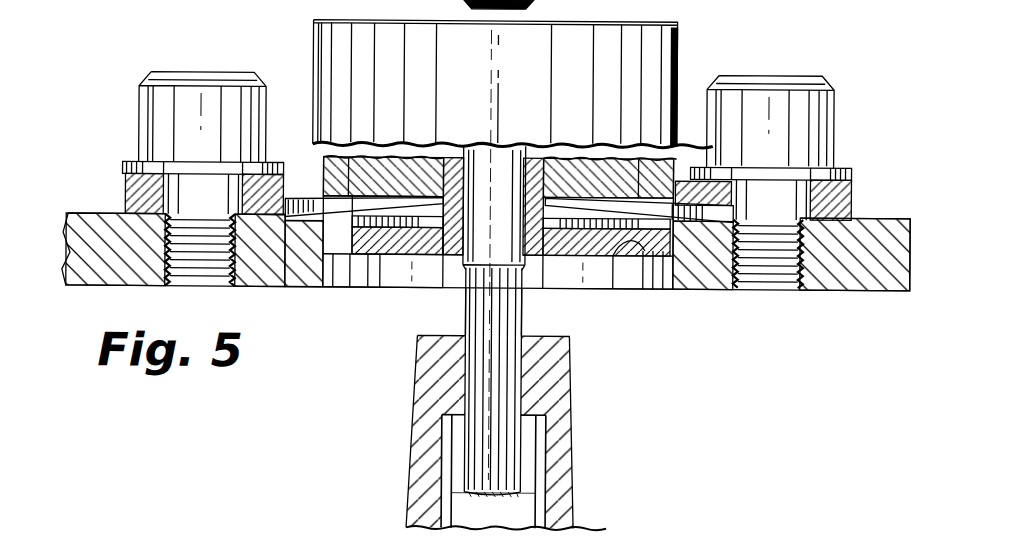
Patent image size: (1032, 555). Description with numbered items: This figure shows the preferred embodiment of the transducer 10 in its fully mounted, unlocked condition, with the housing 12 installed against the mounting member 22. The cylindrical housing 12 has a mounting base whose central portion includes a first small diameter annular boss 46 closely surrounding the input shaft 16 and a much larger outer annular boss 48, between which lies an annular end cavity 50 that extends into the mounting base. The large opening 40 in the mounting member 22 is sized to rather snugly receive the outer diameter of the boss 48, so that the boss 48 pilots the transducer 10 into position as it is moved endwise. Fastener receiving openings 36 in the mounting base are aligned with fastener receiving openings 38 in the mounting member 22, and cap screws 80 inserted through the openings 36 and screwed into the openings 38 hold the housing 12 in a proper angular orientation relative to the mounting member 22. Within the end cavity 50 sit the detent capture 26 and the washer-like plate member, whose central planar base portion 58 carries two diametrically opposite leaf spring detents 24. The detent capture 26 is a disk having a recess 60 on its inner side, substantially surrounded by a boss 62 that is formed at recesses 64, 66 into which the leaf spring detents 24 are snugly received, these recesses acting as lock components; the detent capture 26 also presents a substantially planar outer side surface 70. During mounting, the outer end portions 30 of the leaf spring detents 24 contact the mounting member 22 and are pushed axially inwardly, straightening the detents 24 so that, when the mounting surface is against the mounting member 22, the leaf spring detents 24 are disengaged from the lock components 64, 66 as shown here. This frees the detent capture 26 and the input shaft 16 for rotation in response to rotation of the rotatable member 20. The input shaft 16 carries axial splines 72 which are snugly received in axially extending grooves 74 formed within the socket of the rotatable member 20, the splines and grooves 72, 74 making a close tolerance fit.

The transducer 10 is at (300, 51).
The housing 12 is at (652, 40).
The input shaft 16 is at (527, 333).
The rotatable member 20 is at (562, 485).
The mounting member 22 is at (90, 218).
The leaf spring detent 24 is at (323, 185).
The detent capture 26 is at (401, 285).
The outer end portion 30 is at (263, 289).
The fastener receiving openings 36 is at (220, 180).
The fastener receiving openings 38 is at (129, 288).
The large opening 40 is at (376, 341).
The first small diameter annular boss 46 is at (512, 185).
The outer annular boss 48 is at (570, 332).
The end cavity 50 is at (703, 198).
The central planar base portion 58 is at (432, 190).
The recess 60 is at (437, 255).
The boss 62 is at (543, 290).
The recess 64 is at (333, 289).
The recess 66 is at (645, 290).
The outer side surface 70 is at (353, 289).
The axial splines 72 is at (503, 387).
The axially extending grooves 74 is at (472, 380).
The cap screws 80 is at (190, 188).